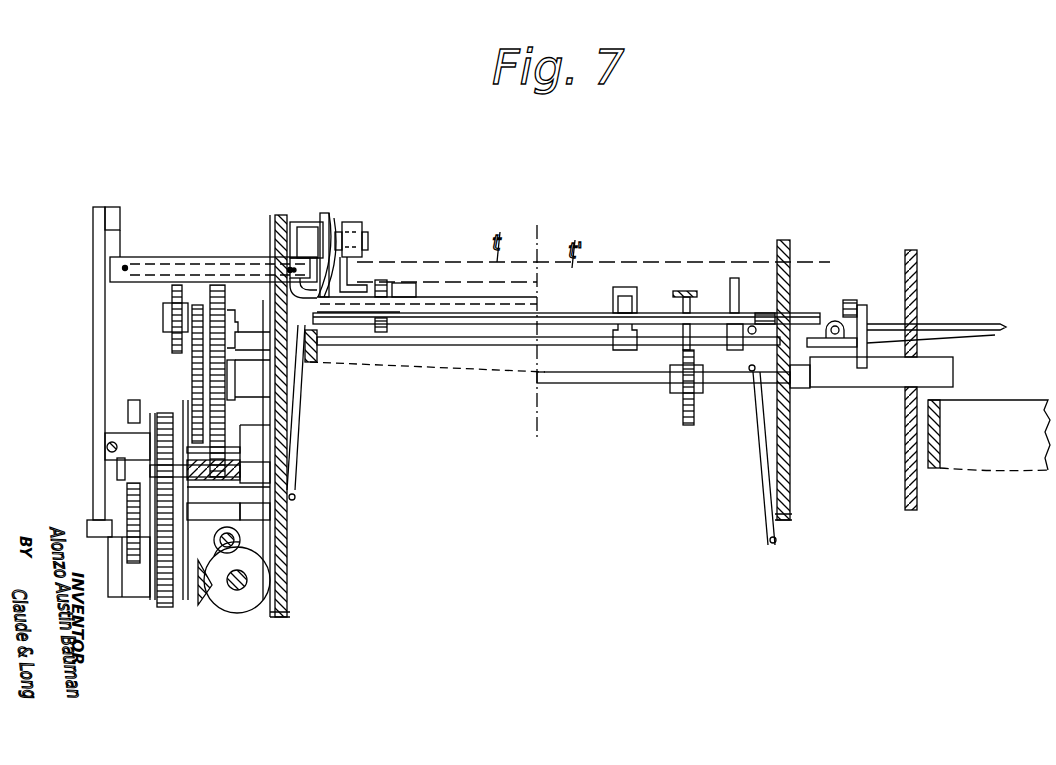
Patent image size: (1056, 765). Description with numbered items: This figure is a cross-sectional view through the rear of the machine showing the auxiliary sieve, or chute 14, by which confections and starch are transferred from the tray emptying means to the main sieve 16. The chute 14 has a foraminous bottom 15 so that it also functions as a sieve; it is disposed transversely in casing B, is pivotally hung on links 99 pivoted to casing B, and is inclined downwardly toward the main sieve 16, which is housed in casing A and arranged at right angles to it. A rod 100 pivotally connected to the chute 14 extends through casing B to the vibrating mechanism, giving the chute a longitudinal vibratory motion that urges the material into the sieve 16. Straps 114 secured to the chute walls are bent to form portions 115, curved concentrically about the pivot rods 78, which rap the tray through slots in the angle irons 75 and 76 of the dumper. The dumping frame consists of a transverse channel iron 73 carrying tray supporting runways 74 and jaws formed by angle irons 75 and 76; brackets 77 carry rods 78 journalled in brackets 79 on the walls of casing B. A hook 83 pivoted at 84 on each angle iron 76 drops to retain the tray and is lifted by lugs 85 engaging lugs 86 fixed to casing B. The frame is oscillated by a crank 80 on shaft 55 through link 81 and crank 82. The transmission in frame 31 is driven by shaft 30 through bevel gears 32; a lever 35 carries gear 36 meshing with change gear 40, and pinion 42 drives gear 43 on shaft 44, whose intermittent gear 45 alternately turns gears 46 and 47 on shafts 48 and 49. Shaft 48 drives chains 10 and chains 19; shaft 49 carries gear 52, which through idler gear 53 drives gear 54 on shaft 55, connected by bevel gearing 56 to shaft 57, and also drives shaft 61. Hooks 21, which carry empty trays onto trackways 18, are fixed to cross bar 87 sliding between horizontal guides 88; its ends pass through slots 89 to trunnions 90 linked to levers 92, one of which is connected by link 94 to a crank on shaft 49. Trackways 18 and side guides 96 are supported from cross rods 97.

The chains 10 is at (408, 333).
The chute 14 is at (500, 372).
The foraminous bottom 15 is at (445, 372).
The main sieve 16 is at (935, 415).
The trackways 18 is at (697, 313).
The chains 19 is at (683, 410).
The hooks 21 is at (626, 288).
The shaft 30 is at (240, 540).
The frame 31 is at (115, 548).
The bevel gears 32 is at (240, 510).
The lever 35 is at (128, 520).
The gear 36 is at (157, 515).
The gear 40 is at (172, 320).
The pinion 42 is at (292, 490).
The gear 43 is at (192, 372).
The shaft 44 is at (192, 440).
The intermittent gear 45 is at (237, 400).
The gear 46 is at (217, 285).
The gear 47 is at (228, 450).
The shaft 48 is at (205, 290).
The shaft 49 is at (150, 425).
The gear 52 is at (105, 440).
The idler gear 53 is at (200, 590).
The gear 54 is at (157, 600).
The shaft 55 is at (112, 597).
The bevel gearing 56 is at (235, 600).
The shaft 57 is at (245, 590).
The shaft 61 is at (117, 468).
The transverse channel iron 73 is at (470, 350).
The tray supporting runways 74 is at (440, 282).
The angle iron 75 is at (410, 283).
The angle iron 76 is at (345, 280).
The brackets 77 is at (298, 222).
The rods 78 is at (175, 262).
The brackets 79 is at (280, 270).
The crank 80 is at (112, 560).
The link 81 is at (93, 315).
The crank 82 is at (125, 262).
The hook 83 is at (352, 225).
The pivot 84 is at (352, 270).
The lugs 85 is at (338, 235).
The lugs 86 is at (331, 213).
The cross bar 87 is at (686, 320).
The horizontal guides 88 is at (783, 240).
The slots 89 is at (796, 305).
The trunnions 90 is at (848, 300).
The lever 92 is at (920, 340).
The link 94 is at (108, 447).
The side guides 96 is at (736, 278).
The cross rods 97 is at (672, 380).
The links 99 is at (300, 420).
The rod 100 is at (930, 324).
The straps 114 is at (322, 215).
The curved portion 115 is at (365, 232).
The casing A is at (905, 458).
The casing B is at (287, 528).